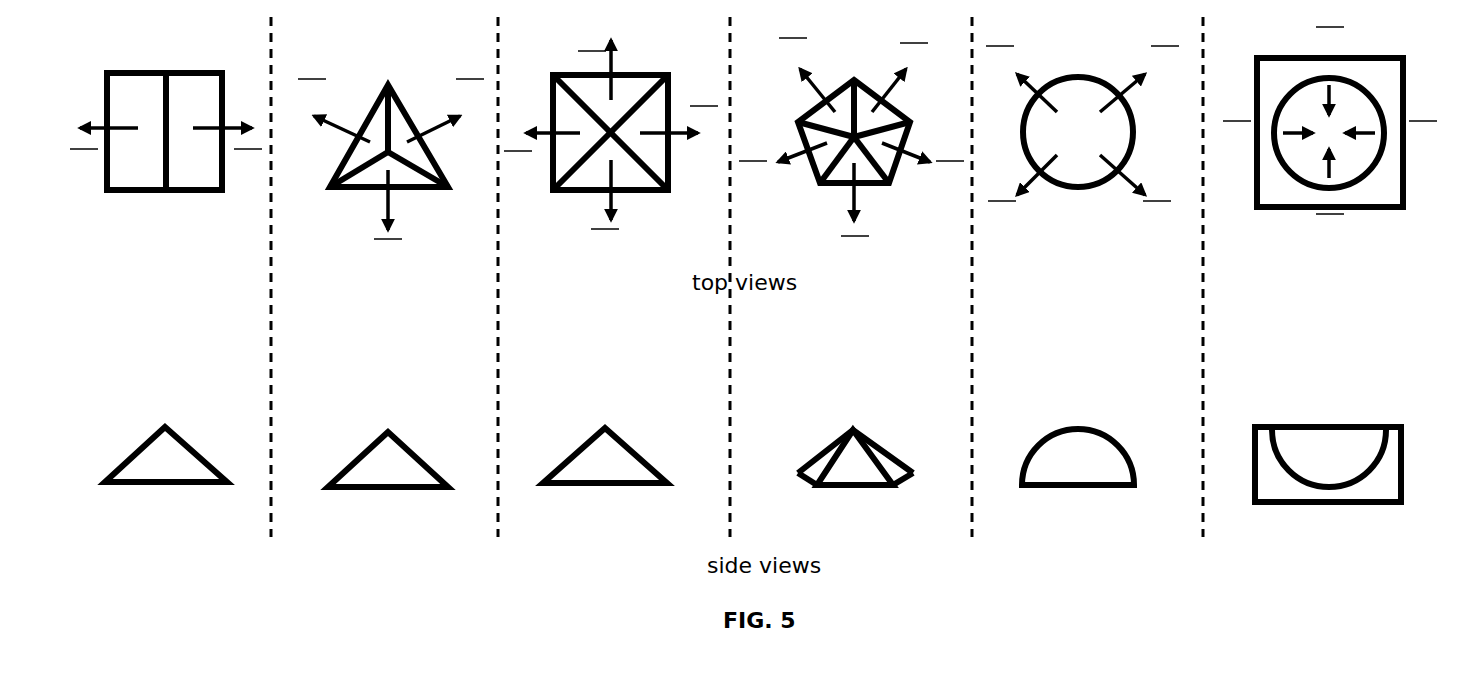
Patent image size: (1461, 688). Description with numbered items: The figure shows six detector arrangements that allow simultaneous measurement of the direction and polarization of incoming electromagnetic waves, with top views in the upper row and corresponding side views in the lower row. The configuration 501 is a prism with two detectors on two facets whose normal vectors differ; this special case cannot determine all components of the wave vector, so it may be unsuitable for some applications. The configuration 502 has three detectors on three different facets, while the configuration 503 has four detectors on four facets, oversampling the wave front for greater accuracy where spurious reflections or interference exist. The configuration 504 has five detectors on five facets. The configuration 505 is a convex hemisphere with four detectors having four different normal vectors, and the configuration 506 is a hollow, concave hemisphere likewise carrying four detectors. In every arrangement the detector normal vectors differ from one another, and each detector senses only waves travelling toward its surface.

The prism configuration 501 is at (166, 308).
The three-detector configuration 502 is at (391, 311).
The four-detector configuration 503 is at (611, 291).
The five-detector configuration 504 is at (851, 290).
The hemisphere configuration 505 is at (1082, 294).
The hollow hemisphere configuration 506 is at (1330, 285).